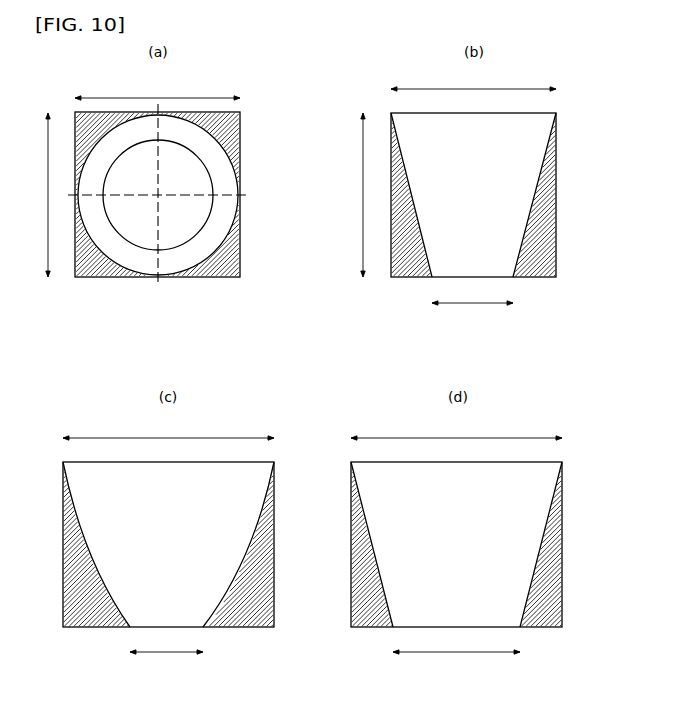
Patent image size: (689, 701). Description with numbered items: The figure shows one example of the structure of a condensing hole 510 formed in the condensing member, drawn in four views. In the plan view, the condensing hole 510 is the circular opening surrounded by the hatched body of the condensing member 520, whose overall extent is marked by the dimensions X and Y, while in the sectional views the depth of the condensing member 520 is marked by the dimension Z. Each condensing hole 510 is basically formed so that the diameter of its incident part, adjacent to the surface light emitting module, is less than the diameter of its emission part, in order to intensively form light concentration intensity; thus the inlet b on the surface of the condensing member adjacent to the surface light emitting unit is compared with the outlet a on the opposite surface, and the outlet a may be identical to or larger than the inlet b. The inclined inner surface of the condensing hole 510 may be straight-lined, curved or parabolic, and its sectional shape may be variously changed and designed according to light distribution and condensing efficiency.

The condensing hole 510 is at (197, 212).
The reflective portion 520 is at (243, 125).
The width dimension of reflective portion X is at (157, 91).
The height dimension of reflective portion Y is at (41, 195).
The thickness dimension of reflective portion Z is at (357, 195).
The outlet a is at (312, 256).
The inlet b is at (325, 470).